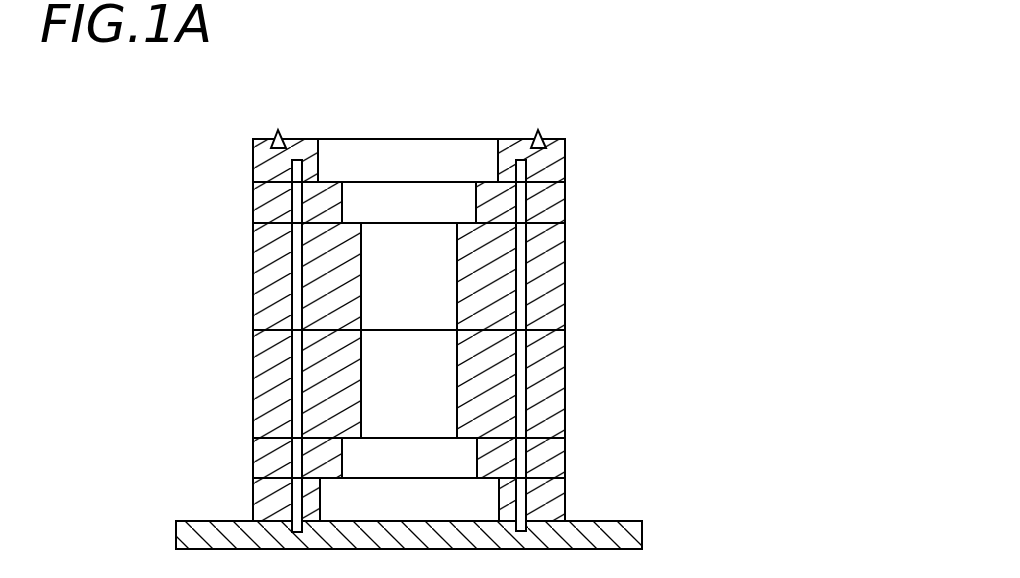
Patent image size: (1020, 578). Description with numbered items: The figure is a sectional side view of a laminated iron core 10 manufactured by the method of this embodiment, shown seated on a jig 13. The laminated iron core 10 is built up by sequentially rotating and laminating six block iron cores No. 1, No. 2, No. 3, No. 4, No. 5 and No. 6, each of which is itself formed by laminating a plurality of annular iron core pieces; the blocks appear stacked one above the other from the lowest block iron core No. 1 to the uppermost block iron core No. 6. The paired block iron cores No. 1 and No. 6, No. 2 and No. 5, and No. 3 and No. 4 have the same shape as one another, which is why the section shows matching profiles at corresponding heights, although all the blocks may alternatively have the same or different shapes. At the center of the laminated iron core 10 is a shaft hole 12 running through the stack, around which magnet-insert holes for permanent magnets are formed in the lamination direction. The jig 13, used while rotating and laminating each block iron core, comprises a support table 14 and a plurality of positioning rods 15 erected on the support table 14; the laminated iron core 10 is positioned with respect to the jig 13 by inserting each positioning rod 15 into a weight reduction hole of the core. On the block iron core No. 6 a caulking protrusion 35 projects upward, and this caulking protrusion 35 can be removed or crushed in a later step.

The laminated iron core 10 is at (565, 90).
The shaft hole 12 is at (389, 128).
The jig 13 is at (195, 503).
The support table 14 is at (185, 538).
The positioning rods 15 is at (300, 360).
The caulking protrusion 35 is at (280, 130).
The block iron core No. 1 is at (557, 502).
The block iron core No. 2 is at (557, 463).
The block iron core No. 3 is at (555, 387).
The block iron core No. 4 is at (555, 285).
The block iron core No. 5 is at (553, 210).
The block iron core No. 6 is at (553, 168).